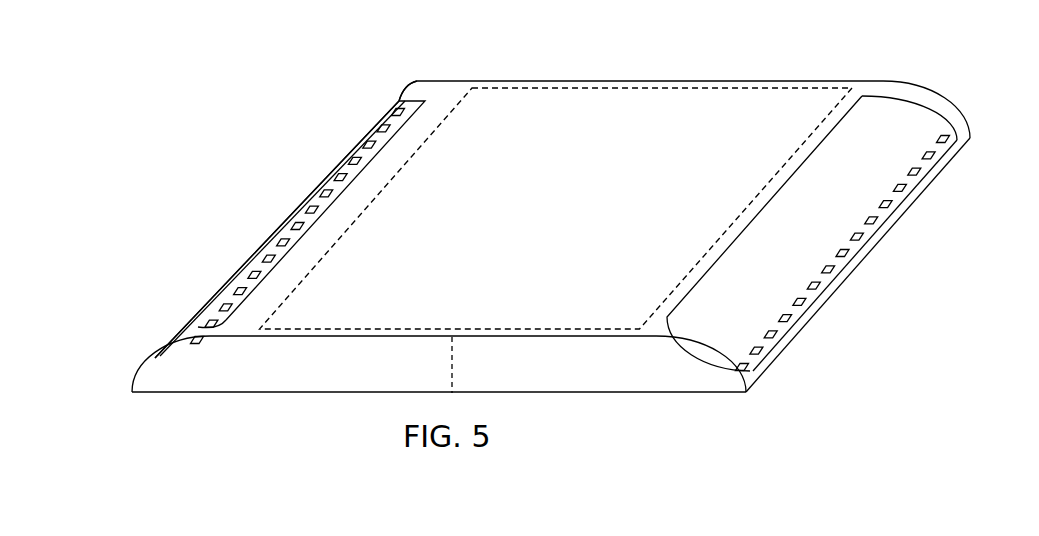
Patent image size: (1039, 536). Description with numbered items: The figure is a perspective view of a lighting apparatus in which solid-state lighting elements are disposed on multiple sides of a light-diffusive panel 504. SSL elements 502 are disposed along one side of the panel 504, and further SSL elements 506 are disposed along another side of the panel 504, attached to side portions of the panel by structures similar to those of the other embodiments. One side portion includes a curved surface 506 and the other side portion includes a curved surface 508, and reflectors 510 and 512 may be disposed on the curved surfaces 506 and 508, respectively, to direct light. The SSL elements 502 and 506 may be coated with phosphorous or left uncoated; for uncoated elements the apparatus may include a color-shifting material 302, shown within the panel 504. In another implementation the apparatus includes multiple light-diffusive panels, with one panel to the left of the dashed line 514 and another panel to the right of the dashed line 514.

The color-shifting material 302 is at (553, 81).
The SSL elements 502 is at (401, 103).
The panel 504 is at (593, 374).
The curved surface 506 is at (418, 92).
The curved surface 508 is at (908, 90).
The reflector 510 is at (322, 180).
The reflector 512 is at (865, 118).
The dashed line 514 is at (455, 365).